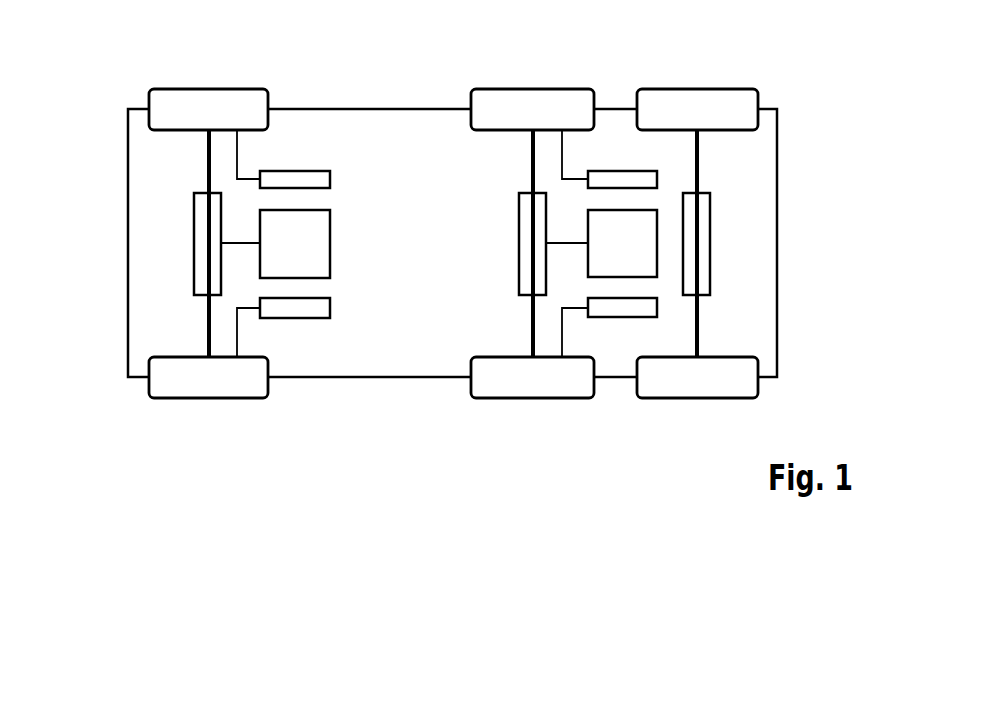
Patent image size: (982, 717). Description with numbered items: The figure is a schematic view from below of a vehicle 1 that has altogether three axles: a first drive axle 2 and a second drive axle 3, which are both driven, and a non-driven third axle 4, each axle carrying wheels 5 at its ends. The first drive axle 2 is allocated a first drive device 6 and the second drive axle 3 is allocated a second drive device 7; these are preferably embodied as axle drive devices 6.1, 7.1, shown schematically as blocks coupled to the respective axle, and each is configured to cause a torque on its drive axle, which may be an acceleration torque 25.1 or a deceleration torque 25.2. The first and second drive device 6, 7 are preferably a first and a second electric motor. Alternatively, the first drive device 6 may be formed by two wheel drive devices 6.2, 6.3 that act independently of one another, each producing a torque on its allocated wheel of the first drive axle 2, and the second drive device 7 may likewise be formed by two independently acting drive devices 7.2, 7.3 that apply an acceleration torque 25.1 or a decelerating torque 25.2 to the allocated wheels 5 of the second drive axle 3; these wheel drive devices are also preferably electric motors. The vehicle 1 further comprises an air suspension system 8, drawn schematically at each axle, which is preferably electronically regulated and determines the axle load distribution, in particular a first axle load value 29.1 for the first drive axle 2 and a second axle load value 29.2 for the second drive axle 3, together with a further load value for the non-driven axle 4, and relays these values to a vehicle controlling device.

The vehicle 1 is at (777, 203).
The first drive axle 2 is at (207, 165).
The second drive axle 3 is at (531, 165).
The non-driven third axle 4 is at (697, 153).
The wheels 5 is at (204, 89).
The first drive device 6 is at (350, 244).
The axle drive device 6.1 is at (330, 254).
The wheel drive device 6.2 is at (330, 176).
The wheel drive device 6.3 is at (330, 306).
The second drive device 7 is at (720, 259).
The axle drive device 7.1 is at (657, 257).
The drive device 7.2 is at (624, 171).
The drive device 7.3 is at (627, 317).
The air suspension system 8 is at (436, 244).
The first axle load value 29.1 is at (194, 248).
The second axle load value 29.2 is at (519, 230).
The acceleration torque 25.1 is at (237, 243).
The deceleration torque 25.2 is at (562, 245).